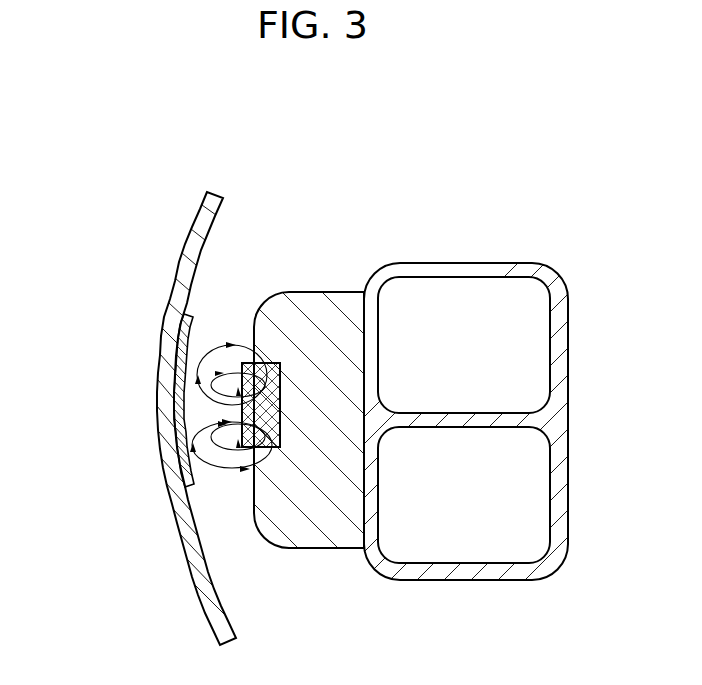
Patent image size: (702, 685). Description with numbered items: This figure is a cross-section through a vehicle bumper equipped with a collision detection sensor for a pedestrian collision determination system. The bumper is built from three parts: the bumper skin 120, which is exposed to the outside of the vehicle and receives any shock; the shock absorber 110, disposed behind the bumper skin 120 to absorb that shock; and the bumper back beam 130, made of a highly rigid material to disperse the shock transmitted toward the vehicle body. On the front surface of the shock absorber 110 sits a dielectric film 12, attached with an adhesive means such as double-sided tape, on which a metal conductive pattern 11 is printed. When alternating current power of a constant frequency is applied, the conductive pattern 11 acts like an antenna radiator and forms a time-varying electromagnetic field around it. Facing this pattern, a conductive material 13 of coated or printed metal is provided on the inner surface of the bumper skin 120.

The conductive pattern 11 is at (227, 422).
The dielectric film 12 is at (276, 412).
The conductive material 13 is at (194, 327).
The shock absorber 110 is at (315, 307).
The bumper skin 120 is at (176, 277).
The bumper back beam 130 is at (488, 265).